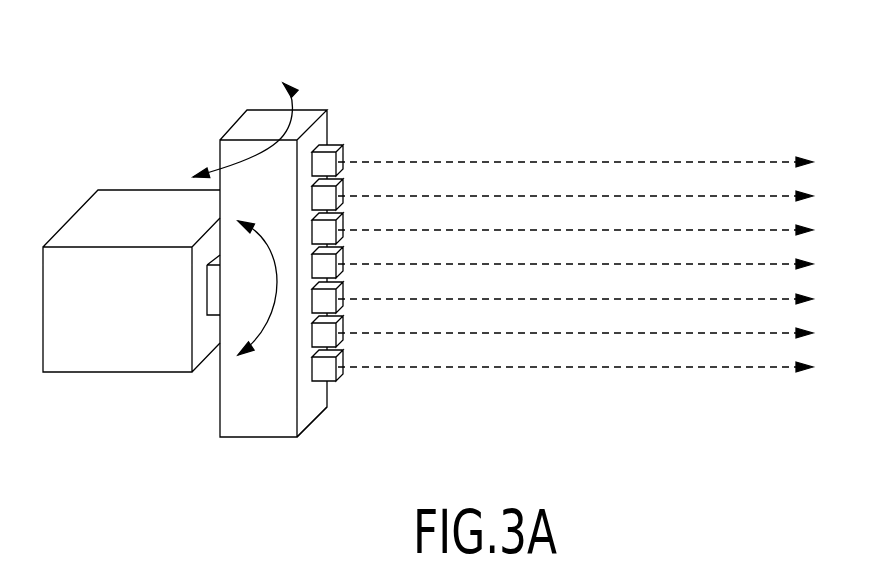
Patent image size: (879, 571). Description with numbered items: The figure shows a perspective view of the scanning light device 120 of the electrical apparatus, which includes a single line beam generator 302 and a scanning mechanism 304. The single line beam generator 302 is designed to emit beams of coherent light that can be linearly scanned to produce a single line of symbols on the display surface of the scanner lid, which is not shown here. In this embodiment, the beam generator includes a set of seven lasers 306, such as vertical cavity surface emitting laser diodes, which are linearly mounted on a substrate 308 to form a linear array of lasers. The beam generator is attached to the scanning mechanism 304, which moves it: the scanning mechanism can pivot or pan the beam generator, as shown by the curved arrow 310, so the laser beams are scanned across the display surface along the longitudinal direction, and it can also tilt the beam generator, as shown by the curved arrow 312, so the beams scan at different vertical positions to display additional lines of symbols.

The scanning light device 120 is at (597, 113).
The single line beam generator 302 is at (337, 92).
The scanning mechanism 304 is at (78, 372).
The lasers 306 is at (340, 156).
The substrate 308 is at (317, 418).
The curved arrow 310 is at (293, 102).
The curved arrow 312 is at (257, 340).